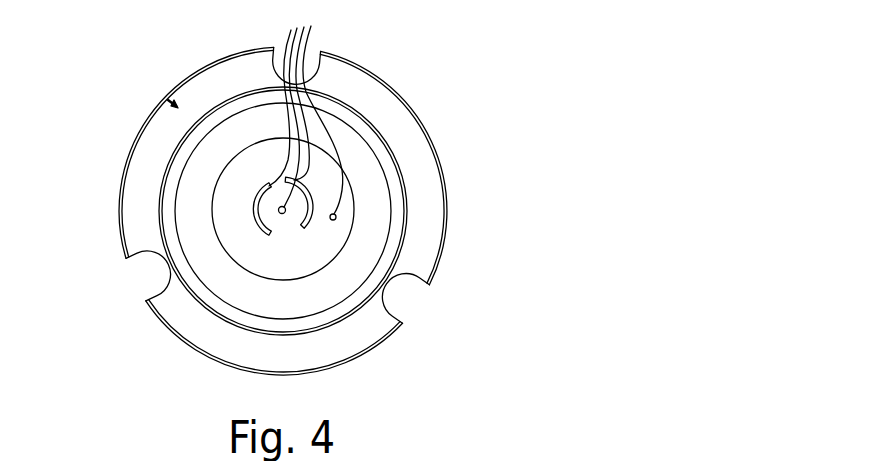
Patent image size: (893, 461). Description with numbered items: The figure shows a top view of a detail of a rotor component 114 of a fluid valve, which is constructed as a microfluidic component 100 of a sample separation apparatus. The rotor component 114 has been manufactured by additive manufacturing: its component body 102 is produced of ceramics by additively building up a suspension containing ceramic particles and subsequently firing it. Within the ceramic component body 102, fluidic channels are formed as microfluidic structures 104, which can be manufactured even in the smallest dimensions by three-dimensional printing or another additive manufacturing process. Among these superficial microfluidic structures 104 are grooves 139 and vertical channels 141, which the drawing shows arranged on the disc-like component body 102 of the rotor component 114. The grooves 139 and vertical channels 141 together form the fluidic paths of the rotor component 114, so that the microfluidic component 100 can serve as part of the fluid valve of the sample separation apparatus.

The microfluidic component 100 is at (343, 192).
The component body 102 is at (369, 94).
The microfluidic structures 104 is at (310, 108).
The rotor component 114 is at (168, 100).
The grooves 139 is at (305, 228).
The vertical channels 141 is at (279, 208).